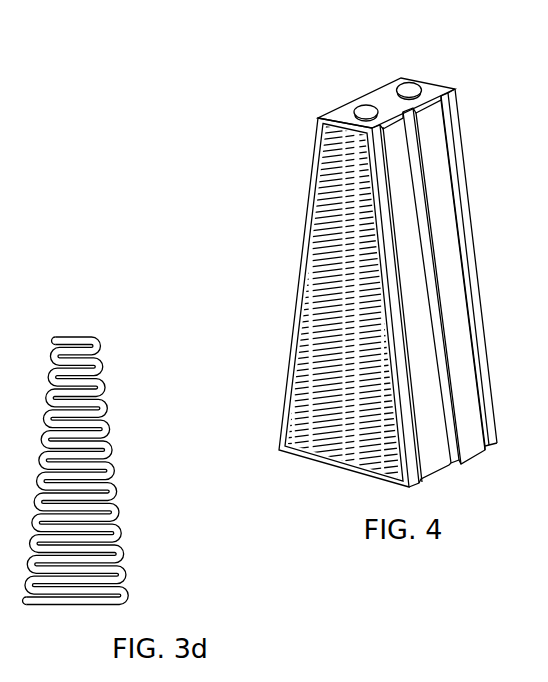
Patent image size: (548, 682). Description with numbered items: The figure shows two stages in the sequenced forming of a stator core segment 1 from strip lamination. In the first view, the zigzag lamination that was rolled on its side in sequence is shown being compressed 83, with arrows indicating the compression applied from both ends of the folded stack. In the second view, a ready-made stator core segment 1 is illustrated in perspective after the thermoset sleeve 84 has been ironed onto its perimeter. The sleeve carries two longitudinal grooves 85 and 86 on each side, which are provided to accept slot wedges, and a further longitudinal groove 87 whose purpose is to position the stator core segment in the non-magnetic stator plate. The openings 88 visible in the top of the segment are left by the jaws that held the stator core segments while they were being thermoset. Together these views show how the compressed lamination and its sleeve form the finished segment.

In FIG. 4, the stator core segment 1 is at (360, 452).
In FIG. 3d, the compression 83 is at (77, 336).
In FIG. 4, the thermoset sleeve 84 is at (464, 448).
In FIG. 4, the longitudinal groove 85 is at (341, 108).
In FIG. 4, the longitudinal groove 86 is at (396, 76).
In FIG. 4, the longitudinal groove 87 is at (368, 99).
In FIG. 4, the openings 88 is at (422, 82).